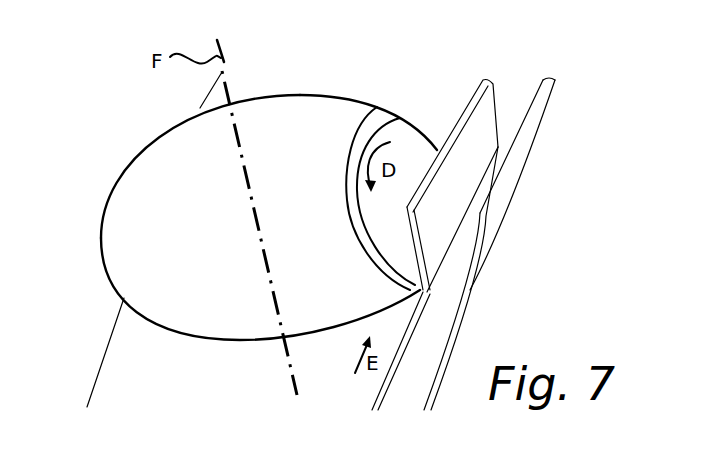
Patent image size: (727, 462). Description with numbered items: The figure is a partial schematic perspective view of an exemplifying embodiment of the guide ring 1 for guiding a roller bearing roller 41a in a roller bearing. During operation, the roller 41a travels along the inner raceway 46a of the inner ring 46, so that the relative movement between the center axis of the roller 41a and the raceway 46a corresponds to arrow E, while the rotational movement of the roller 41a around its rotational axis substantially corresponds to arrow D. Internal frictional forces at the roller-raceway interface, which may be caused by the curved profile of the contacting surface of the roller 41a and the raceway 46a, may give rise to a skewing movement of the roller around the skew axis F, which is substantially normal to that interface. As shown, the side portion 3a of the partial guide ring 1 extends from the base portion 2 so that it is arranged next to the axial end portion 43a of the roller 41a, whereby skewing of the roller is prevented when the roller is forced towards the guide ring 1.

The guide ring 1 is at (529, 76).
The base portion 2 is at (453, 270).
The side portion 3a is at (432, 228).
The roller bearing roller 41a is at (123, 250).
The axial end portion 43a is at (402, 272).
The inner ring 46 is at (103, 353).
The inner raceway 46a is at (204, 380).